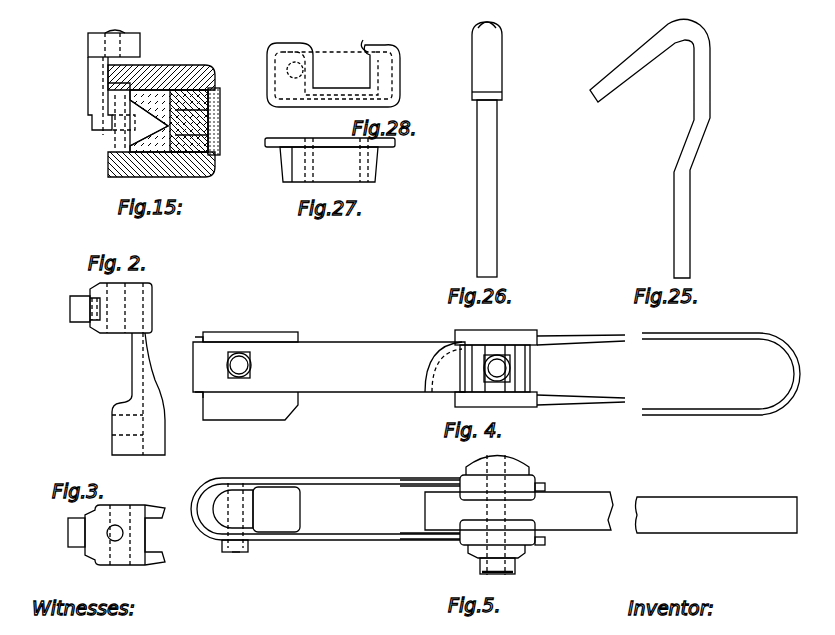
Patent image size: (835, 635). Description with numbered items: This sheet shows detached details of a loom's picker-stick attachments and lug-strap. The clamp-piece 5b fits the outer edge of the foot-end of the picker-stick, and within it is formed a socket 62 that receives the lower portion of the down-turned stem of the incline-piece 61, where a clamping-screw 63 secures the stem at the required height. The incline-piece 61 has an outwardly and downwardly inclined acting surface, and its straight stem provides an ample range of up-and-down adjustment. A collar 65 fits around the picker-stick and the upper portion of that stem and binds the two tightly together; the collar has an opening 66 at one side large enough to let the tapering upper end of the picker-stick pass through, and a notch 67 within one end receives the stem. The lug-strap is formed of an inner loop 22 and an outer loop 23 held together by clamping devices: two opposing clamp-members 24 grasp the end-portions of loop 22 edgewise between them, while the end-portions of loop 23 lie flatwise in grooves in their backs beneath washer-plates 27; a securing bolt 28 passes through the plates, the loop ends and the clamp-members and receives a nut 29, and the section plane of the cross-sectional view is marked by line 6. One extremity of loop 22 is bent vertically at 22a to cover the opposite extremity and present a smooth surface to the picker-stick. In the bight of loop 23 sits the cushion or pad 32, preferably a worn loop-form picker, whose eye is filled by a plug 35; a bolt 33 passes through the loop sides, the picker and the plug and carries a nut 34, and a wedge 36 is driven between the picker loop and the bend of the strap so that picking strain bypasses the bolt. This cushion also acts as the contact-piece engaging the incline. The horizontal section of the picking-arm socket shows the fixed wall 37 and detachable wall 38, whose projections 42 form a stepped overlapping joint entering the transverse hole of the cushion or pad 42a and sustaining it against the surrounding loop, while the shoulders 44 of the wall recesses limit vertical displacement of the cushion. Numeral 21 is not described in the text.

In FIG. 15, the clamping bolt 21 is at (88, 95).
In FIG. 4, the loop 22 is at (668, 412).
In FIG. 5, the loop 22 is at (692, 496).
In FIG. 4, the bent extremity 22a is at (428, 360).
In FIG. 5, the bent extremity 22a is at (425, 506).
In FIG. 4, the outer loop 23 is at (350, 340).
In FIG. 5, the outer loop 23 is at (360, 478).
In FIG. 4, the clamp-member 24 is at (538, 338).
In FIG. 5, the clamp-member 24 is at (546, 488).
In FIG. 4, the washer-plate 27 is at (520, 386).
In FIG. 5, the washer-plate 27 is at (520, 465).
In FIG. 4, the securing bolt 28 is at (497, 355).
In FIG. 5, the securing bolt 28 is at (497, 574).
In FIG. 4, the nut 29 is at (512, 362).
In FIG. 5, the nut 29 is at (515, 566).
In FIG. 4, the cushion or pad 32 is at (272, 332).
In FIG. 5, the cushion or pad 32 is at (283, 494).
In FIG. 4, the bolt 33 is at (250, 365).
In FIG. 5, the bolt 33 is at (235, 556).
In FIG. 4, the nut 34 is at (228, 365).
In FIG. 5, the nut 34 is at (222, 545).
In FIG. 5, the plug 35 is at (247, 488).
In FIG. 4, the wedge 36 is at (200, 338).
In FIG. 5, the wedge 36 is at (210, 490).
In FIG. 15, the fixed wall 37 is at (110, 163).
In FIG. 15, the detachable wall 38 is at (195, 68).
In FIG. 15, the projection 42 is at (212, 98).
In FIG. 15, the cushion or pad 42a is at (218, 140).
In FIG. 28, the shoulder 44 is at (331, 6).
In FIG. 2, the clamp-piece 5b is at (132, 358).
In FIG. 3, the clamp-piece 5b is at (128, 504).
In FIG. 4, the line 6 6 is at (540, 430).
In FIG. 26, the incline-piece 61 is at (478, 78).
In FIG. 25, the incline-piece 61 is at (642, 48).
In FIG. 3, the socket 62 is at (117, 542).
In FIG. 2, the clamping-screw 63 is at (72, 309).
In FIG. 3, the clamping-screw 63 is at (76, 532).
In FIG. 28, the collar 65 is at (400, 56).
In FIG. 27, the collar 65 is at (280, 170).
In FIG. 28, the opening 66 is at (362, 42).
In FIG. 28, the notch 67 is at (293, 62).